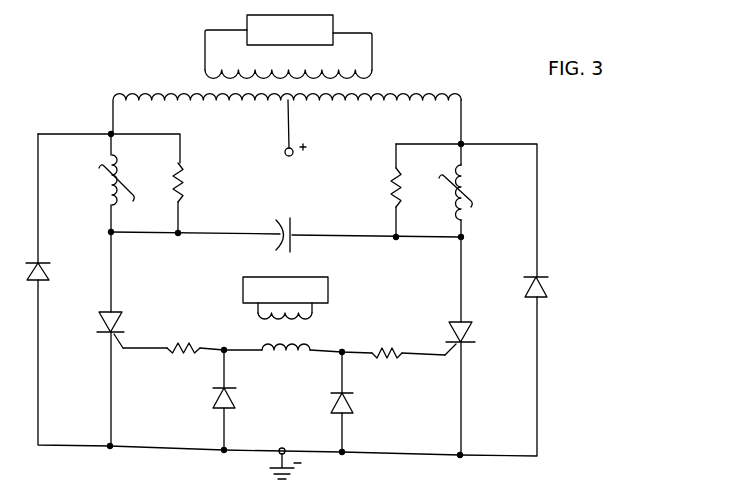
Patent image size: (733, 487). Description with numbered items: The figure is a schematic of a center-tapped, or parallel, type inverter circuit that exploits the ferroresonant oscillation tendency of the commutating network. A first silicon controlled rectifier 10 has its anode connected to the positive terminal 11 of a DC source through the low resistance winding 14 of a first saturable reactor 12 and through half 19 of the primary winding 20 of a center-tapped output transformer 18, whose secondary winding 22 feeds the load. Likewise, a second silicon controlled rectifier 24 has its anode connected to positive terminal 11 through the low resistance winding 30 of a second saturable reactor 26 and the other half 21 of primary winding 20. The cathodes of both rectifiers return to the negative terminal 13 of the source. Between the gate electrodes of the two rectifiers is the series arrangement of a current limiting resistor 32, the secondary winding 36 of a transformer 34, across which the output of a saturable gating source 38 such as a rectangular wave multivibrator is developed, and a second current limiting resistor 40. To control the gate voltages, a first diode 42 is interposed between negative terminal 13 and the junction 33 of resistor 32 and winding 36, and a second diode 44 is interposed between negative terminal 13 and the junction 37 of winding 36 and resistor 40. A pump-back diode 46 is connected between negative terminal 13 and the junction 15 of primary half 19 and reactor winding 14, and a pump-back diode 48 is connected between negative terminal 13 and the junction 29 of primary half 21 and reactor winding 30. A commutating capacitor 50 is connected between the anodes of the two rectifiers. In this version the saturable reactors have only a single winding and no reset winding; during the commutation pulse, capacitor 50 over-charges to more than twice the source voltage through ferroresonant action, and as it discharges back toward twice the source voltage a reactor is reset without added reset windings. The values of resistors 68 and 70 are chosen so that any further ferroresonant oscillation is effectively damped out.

The first silicon controlled rectifier 10 is at (131, 338).
The positive terminal 11 is at (285, 154).
The first saturable reactor 12 is at (150, 159).
The negative terminal 13 is at (282, 448).
The low resistance winding 14 is at (110, 203).
The junction 15 is at (109, 133).
The center-tapped output transformer 18 is at (281, 75).
The primary winding half 19 is at (224, 100).
The primary winding 20 is at (162, 86).
The primary winding half 21 is at (354, 104).
The secondary winding 22 is at (327, 73).
The second silicon controlled rectifier 24 is at (442, 334).
The second saturable reactor 26 is at (430, 168).
The junction 29 is at (462, 144).
The low resistance winding 30 is at (450, 205).
The current limiting resistor 32 is at (193, 345).
The junction 33 is at (222, 351).
The transformer 34 is at (321, 351).
The secondary winding 36 is at (261, 348).
The junction 37 is at (340, 353).
The saturable gating source 38 is at (329, 289).
The current limiting resistor 40 is at (385, 350).
The first diode 42 is at (210, 405).
The second diode 44 is at (356, 405).
The pump-back diode 46 is at (52, 272).
The pump-back diode 48 is at (522, 288).
The commutating capacitor 50 is at (298, 228).
The resistor 68 is at (186, 191).
The resistor 70 is at (392, 191).